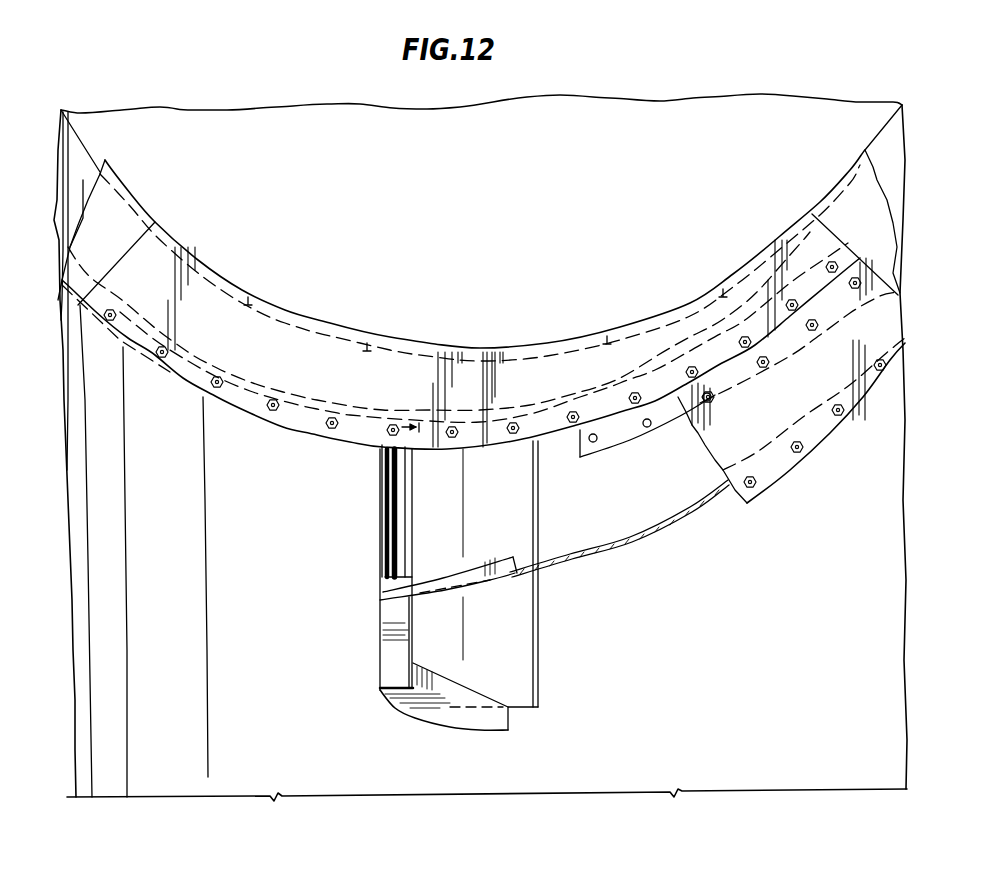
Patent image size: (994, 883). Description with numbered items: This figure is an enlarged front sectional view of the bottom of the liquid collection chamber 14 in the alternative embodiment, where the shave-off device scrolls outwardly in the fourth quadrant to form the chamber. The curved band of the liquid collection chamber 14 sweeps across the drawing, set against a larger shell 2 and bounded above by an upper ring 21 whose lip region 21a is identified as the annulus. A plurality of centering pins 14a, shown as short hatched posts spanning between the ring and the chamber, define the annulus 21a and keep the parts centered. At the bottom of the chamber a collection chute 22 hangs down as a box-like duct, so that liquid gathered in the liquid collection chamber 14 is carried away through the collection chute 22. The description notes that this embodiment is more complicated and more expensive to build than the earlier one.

The tower shell section 2 is at (480, 447).
The liquid collection chamber 14 is at (479, 340).
The centering pins 14a is at (374, 345).
The upper ring 21 is at (482, 255).
The annulus 21a is at (485, 326).
The collection chute 22 is at (417, 585).